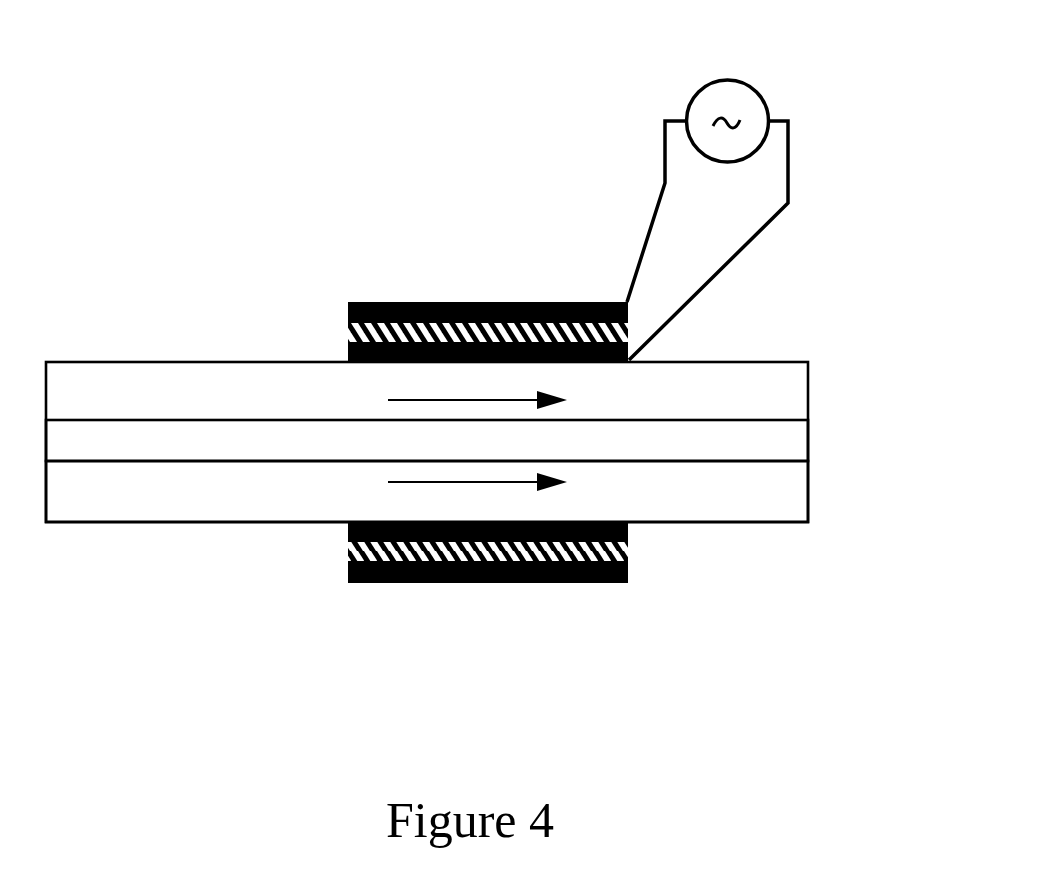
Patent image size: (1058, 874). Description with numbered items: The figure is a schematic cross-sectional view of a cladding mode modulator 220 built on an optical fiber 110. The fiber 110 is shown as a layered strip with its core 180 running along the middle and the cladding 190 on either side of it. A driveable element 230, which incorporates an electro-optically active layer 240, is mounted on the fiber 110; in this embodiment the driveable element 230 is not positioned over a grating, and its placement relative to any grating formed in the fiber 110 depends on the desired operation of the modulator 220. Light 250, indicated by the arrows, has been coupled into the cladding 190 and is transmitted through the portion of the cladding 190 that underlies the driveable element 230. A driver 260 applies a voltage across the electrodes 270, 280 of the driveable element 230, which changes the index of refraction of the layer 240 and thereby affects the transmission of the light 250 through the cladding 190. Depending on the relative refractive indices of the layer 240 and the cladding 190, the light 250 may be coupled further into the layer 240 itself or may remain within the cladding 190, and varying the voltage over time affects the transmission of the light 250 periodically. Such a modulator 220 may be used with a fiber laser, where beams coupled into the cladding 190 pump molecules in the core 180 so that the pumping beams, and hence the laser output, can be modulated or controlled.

The optical fiber 110 is at (788, 360).
The core 180 is at (788, 440).
The cladding 190 is at (108, 500).
The cladding mode modulator 220 is at (80, 234).
The driveable element 230 is at (490, 282).
The electro-optically active layer 240 is at (625, 548).
The light 250 is at (403, 400).
The driver 260 is at (747, 102).
The electrode 270 is at (348, 533).
The electrode 280 is at (348, 580).